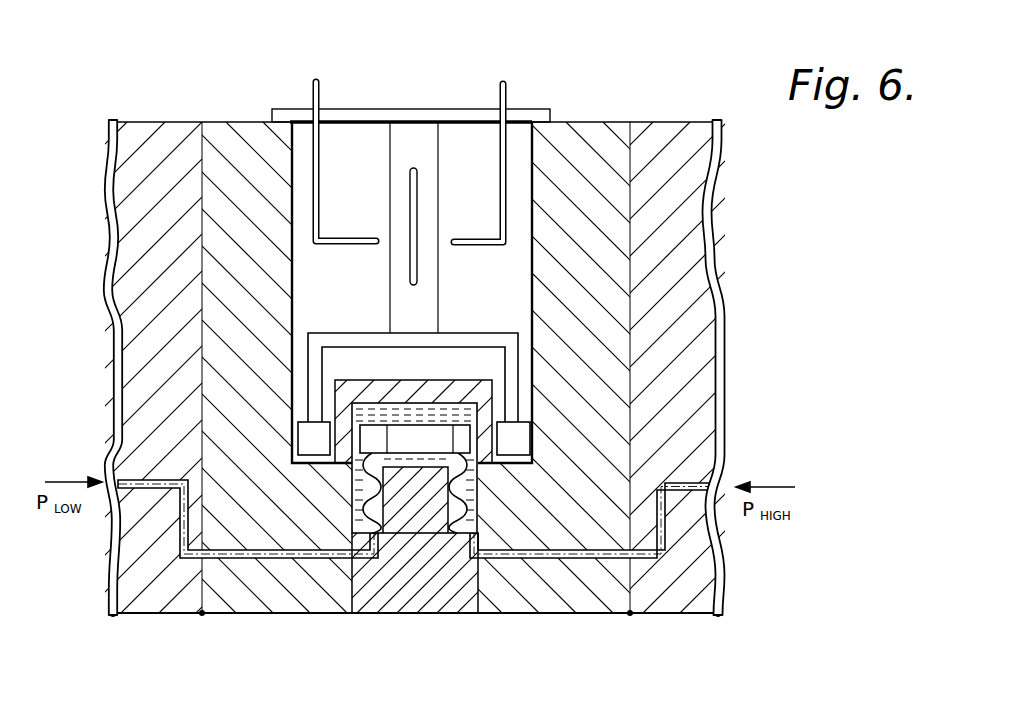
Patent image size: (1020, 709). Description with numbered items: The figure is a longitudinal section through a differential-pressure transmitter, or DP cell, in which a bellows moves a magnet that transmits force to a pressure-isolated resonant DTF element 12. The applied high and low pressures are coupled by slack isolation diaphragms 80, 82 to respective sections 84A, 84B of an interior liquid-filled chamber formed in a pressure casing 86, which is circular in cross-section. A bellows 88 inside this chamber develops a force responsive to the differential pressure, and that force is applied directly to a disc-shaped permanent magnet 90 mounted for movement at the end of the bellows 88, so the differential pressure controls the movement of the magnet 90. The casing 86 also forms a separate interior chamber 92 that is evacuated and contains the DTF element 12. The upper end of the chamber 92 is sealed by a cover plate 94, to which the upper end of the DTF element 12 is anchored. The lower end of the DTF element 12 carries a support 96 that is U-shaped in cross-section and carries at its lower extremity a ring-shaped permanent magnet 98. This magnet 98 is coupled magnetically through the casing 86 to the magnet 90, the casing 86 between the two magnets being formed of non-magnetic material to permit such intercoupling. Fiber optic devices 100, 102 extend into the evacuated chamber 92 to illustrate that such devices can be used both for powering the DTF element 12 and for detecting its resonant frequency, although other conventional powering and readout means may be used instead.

The resonant DTF element 12 is at (431, 207).
The slack isolation diaphragm 80 is at (726, 313).
The slack isolation diaphragm 82 is at (110, 256).
The section of interior liquid-filled chamber 84A is at (386, 428).
The section of interior liquid-filled chamber 84B is at (451, 412).
The pressure casing 86 is at (592, 138).
The bellows 88 is at (358, 497).
The disc-shaped permanent magnet 90 is at (423, 447).
The interior chamber 92 is at (372, 183).
The cover plate 94 is at (410, 110).
The support 96 is at (319, 334).
The ring-shaped permanent magnet 98 is at (298, 438).
The fiber optic device 100 is at (311, 92).
The fiber optic device 102 is at (508, 91).